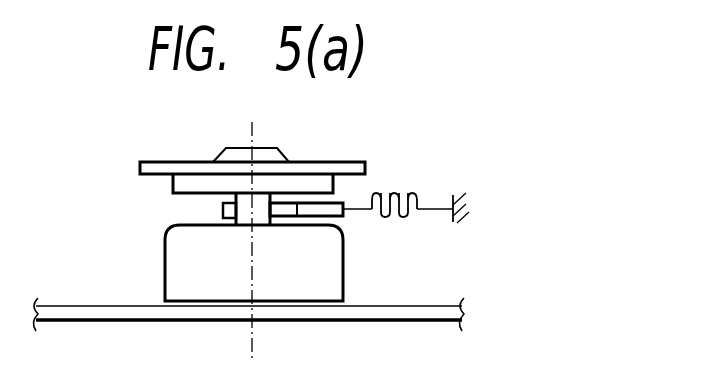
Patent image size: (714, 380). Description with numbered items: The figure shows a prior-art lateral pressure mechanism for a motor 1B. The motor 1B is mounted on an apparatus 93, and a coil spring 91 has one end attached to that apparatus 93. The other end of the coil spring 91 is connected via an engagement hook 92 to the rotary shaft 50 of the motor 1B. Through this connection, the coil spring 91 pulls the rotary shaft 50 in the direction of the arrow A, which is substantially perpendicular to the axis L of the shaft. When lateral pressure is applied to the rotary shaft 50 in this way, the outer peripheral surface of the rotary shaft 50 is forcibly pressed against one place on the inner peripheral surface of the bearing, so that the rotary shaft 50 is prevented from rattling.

The motor 1B is at (330, 137).
The engagement hook 92 is at (320, 210).
The rotary shaft 50 is at (236, 210).
The coil spring 91 is at (400, 192).
The apparatus 93 is at (460, 210).
The axis L is at (252, 133).
The arrow A is at (358, 237).